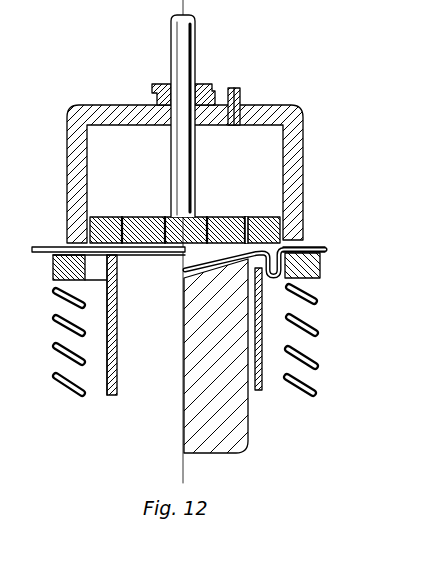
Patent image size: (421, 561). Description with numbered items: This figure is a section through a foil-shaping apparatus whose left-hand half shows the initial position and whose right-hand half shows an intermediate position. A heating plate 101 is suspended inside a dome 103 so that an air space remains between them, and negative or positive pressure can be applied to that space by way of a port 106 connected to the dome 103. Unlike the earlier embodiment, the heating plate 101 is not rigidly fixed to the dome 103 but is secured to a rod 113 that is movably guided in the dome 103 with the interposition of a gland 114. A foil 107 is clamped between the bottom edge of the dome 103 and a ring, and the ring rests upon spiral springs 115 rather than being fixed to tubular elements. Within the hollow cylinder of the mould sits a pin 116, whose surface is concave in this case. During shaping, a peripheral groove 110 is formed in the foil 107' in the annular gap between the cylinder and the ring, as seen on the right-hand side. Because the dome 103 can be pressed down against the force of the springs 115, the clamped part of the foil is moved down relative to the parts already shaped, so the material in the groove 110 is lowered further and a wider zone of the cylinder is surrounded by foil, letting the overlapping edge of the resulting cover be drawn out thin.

The heating plate 101 is at (282, 219).
The dome 103 is at (302, 118).
The port 106 is at (238, 89).
The foil 107 is at (108, 227).
The foil 107' is at (323, 230).
The peripheral groove 110 is at (271, 280).
The rod 113 is at (194, 40).
The gland 114 is at (152, 87).
The spiral springs 115 is at (317, 365).
The pin 116 is at (230, 446).